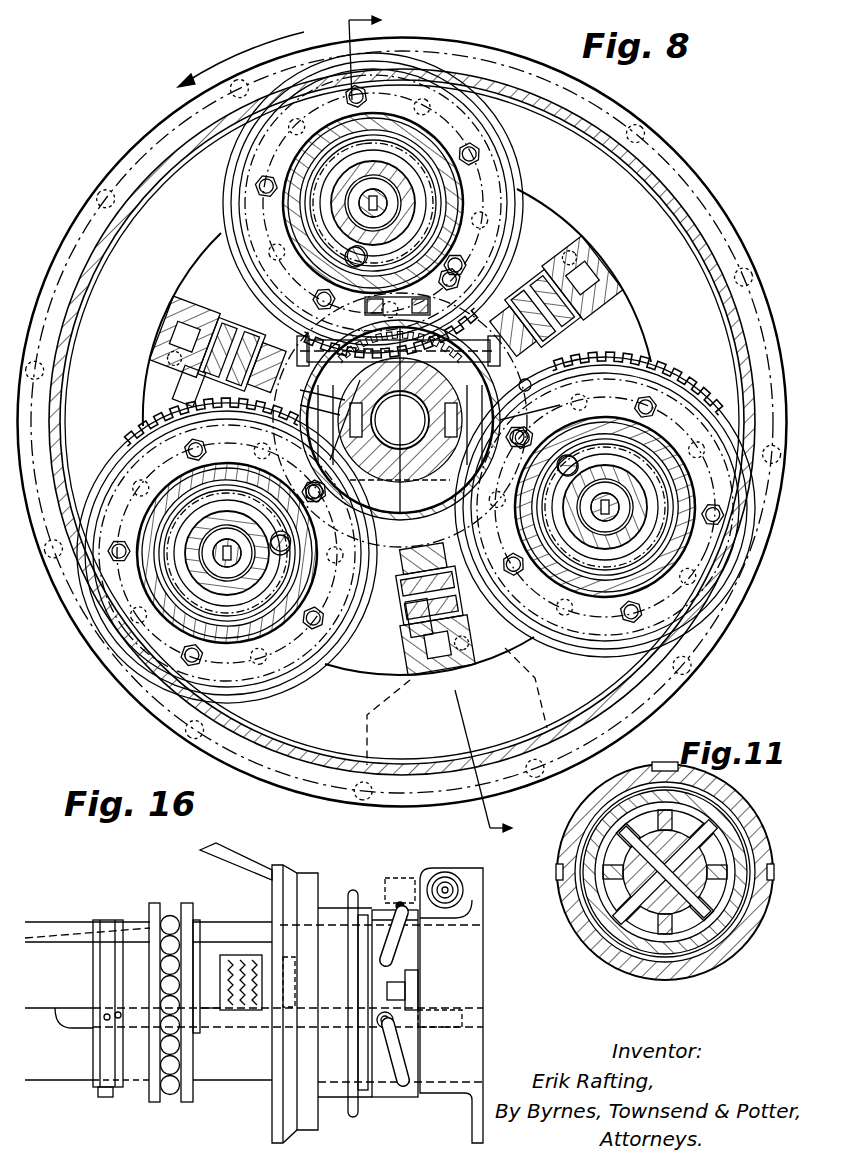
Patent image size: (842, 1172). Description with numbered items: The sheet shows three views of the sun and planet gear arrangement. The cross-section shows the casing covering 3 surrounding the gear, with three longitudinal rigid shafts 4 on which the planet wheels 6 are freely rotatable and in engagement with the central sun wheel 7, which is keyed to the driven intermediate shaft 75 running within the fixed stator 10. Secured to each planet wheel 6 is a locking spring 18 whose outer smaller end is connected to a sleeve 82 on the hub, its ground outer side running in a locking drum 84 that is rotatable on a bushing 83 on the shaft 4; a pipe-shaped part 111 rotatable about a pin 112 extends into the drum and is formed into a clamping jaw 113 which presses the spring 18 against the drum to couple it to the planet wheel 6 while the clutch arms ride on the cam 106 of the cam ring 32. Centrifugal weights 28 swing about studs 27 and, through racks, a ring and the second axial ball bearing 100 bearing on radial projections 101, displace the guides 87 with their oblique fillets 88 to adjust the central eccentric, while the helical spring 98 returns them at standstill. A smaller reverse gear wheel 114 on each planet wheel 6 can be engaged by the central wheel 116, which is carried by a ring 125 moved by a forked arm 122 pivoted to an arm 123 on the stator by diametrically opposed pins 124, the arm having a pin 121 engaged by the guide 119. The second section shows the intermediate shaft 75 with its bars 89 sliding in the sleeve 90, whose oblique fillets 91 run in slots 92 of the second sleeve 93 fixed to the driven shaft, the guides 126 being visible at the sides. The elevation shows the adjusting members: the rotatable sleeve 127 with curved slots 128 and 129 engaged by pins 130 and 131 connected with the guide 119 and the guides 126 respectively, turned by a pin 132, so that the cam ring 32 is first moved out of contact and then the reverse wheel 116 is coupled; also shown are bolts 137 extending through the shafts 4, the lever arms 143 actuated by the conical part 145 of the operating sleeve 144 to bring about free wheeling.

In FIG. 8, the covering 3 is at (700, 205).
In FIG. 8, the longitudinal rigid shafts 4 is at (220, 606).
In FIG. 8, the planet wheels 6 is at (515, 176).
In FIG. 8, the sun wheel 7 is at (540, 375).
In FIG. 8, the stator 10 is at (398, 343).
In FIG. 11, the stator 10 is at (627, 775).
In FIG. 16, the stator 10 is at (225, 1080).
In FIG. 8, the locking spring 18 is at (420, 142).
In FIG. 8, the studs 27 is at (198, 385).
In FIG. 8, the centrifugal weights 28 is at (172, 345).
In FIG. 16, the cam ring 32 is at (107, 926).
In FIG. 8, the intermediate shaft 75 is at (400, 420).
In FIG. 11, the intermediate shaft 75 is at (635, 895).
In FIG. 8, the sleeve 82 is at (648, 524).
In FIG. 8, the bushing 83 is at (648, 502).
In FIG. 8, the locking drum 84 is at (342, 192).
In FIG. 8, the guides 87 is at (314, 391).
In FIG. 8, the oblique fillets 88 is at (423, 408).
In FIG. 11, the fillets or bars 89 is at (735, 835).
In FIG. 11, the sleeve 90 is at (700, 915).
In FIG. 11, the obliquely disposed fillets 91 is at (690, 935).
In FIG. 11, the slots 92 is at (650, 940).
In FIG. 11, the second sleeve 93 is at (600, 912).
In FIG. 11, the helical spring 98 is at (740, 925).
In FIG. 16, the helical spring 98 is at (244, 1010).
In FIG. 16, the second axial ball bearing 100 is at (170, 908).
In FIG. 16, the radial projections 101 is at (197, 924).
In FIG. 16, the cam 106 is at (108, 1097).
In FIG. 8, the pipe-shaped part 111 is at (397, 378).
In FIG. 8, the pin 112 is at (340, 262).
In FIG. 8, the clamping jaw 113 is at (416, 378).
In FIG. 8, the gear wheel 114 is at (500, 188).
In FIG. 8, the central wheel 116 is at (535, 380).
In FIG. 8, the guide 119 is at (365, 312).
In FIG. 11, the guide 119 is at (664, 764).
In FIG. 16, the guide 119 is at (62, 936).
In FIG. 8, the pin 121 is at (424, 342).
In FIG. 8, the forked arm 122 is at (464, 312).
In FIG. 8, the arm 123 is at (465, 258).
In FIG. 8, the pins 124 is at (408, 465).
In FIG. 8, the ring 125 is at (425, 512).
In FIG. 11, the guides 126 is at (558, 892).
In FIG. 16, the guides 126 is at (72, 1028).
In FIG. 16, the sleeve 127 is at (390, 1097).
In FIG. 16, the curved slot 128 is at (396, 947).
In FIG. 16, the curved slot 129 is at (406, 1066).
In FIG. 16, the pin 130 is at (398, 906).
In FIG. 16, the pin 131 is at (394, 1020).
In FIG. 16, the pin 132 is at (396, 878).
In FIG. 8, the bolts 137 is at (135, 584).
In FIG. 16, the lever arm 143 is at (238, 858).
In FIG. 16, the operating sleeve 144 is at (312, 890).
In FIG. 16, the conical part 145 is at (286, 872).